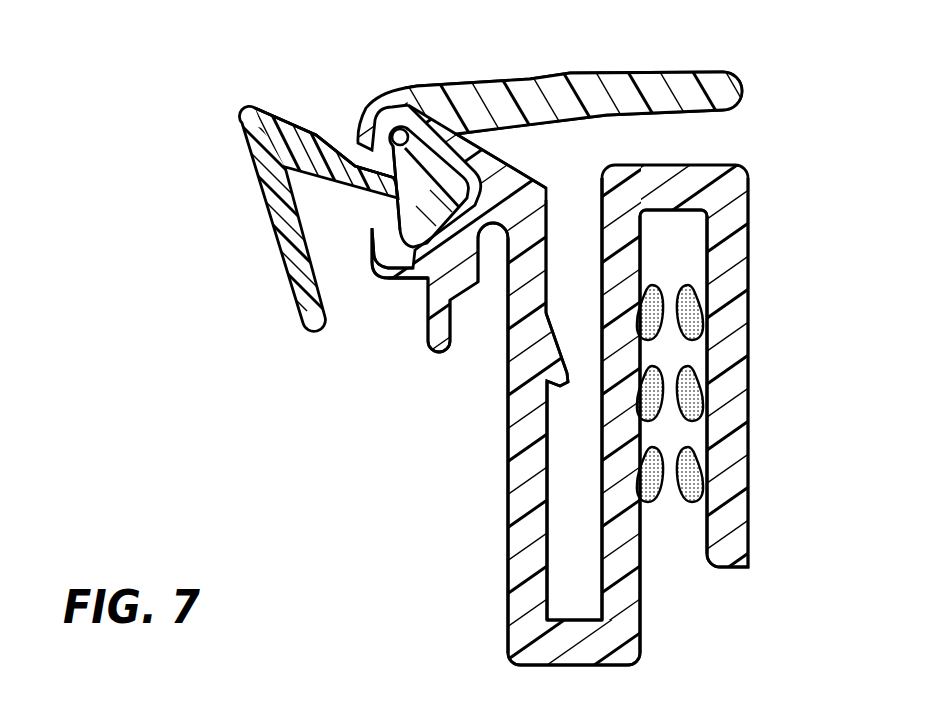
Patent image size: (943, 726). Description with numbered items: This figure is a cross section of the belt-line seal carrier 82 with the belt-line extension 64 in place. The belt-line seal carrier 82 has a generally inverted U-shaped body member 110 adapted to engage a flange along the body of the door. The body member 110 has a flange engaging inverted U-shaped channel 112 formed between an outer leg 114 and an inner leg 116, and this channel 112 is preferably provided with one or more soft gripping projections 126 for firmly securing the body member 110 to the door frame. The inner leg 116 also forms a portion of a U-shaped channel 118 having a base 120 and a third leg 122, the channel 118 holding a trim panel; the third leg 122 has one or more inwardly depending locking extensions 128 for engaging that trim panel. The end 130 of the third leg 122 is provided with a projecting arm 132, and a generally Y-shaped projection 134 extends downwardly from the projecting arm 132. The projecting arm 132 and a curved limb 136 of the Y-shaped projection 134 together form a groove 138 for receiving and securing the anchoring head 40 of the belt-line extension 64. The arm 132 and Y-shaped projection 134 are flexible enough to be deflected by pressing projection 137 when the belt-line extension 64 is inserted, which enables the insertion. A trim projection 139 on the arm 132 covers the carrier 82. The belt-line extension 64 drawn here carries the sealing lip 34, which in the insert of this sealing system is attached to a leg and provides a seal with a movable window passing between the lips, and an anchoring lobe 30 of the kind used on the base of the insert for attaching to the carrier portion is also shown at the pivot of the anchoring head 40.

The anchoring lobe 30 is at (404, 128).
The sealing lip 34 is at (268, 252).
The anchoring head 40 is at (445, 170).
The belt-line extension 64 is at (317, 113).
The belt-line seal carrier 82 is at (425, 449).
The body member 110 is at (777, 449).
The flange engaging inverted U-shaped channel 112 is at (674, 541).
The outer leg 114 is at (747, 293).
The inner leg 116 is at (598, 300).
The U-shaped channel 118 is at (566, 207).
The base 120 is at (573, 658).
The third leg 122 is at (507, 578).
The soft gripping projections 126 is at (660, 482).
The locking extensions 128 is at (567, 387).
The end of the third leg 130 is at (500, 263).
The projecting arm 132 is at (505, 168).
The Y-shaped projection 134 is at (400, 295).
The curved limb 136 is at (374, 258).
The pressing projection 137 is at (451, 334).
The groove 138 is at (396, 212).
The trim projection 139 is at (682, 74).